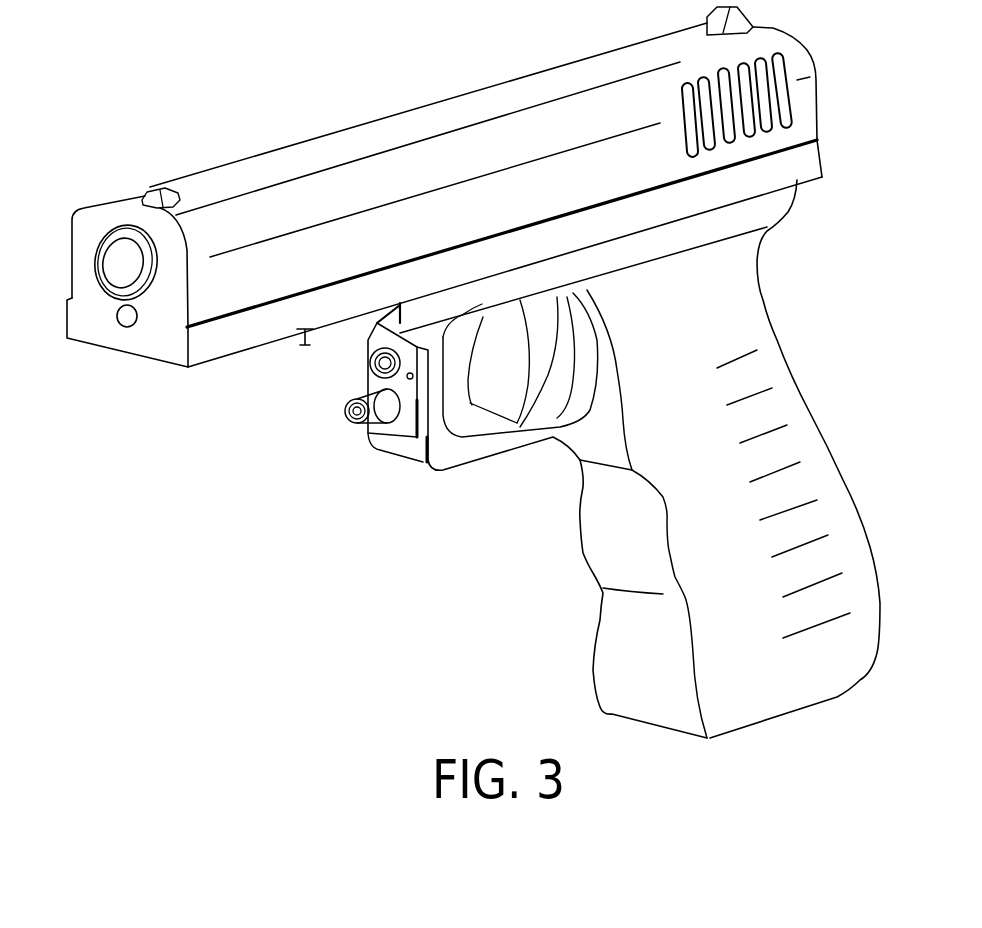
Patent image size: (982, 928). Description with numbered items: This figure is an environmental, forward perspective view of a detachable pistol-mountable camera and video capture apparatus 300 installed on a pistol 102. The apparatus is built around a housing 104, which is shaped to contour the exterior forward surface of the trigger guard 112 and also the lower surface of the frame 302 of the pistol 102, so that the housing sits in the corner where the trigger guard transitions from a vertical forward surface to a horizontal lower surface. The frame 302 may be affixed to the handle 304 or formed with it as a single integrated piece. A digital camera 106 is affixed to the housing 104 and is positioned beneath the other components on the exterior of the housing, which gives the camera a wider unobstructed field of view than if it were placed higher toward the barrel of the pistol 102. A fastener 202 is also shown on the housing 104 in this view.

The detachable pistol-mountable camera and video capture apparatus 300 is at (108, 75).
The pistol 102 is at (420, 173).
The housing 104 is at (527, 460).
The digital camera 106 is at (352, 414).
The trigger guard 112 is at (587, 379).
The fastener screw 202 is at (383, 364).
The frame 302 is at (360, 302).
The handle 304 is at (757, 697).